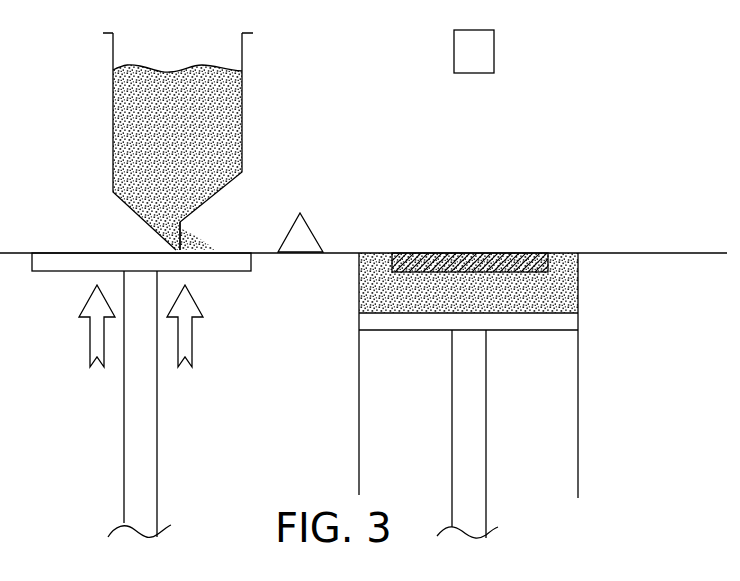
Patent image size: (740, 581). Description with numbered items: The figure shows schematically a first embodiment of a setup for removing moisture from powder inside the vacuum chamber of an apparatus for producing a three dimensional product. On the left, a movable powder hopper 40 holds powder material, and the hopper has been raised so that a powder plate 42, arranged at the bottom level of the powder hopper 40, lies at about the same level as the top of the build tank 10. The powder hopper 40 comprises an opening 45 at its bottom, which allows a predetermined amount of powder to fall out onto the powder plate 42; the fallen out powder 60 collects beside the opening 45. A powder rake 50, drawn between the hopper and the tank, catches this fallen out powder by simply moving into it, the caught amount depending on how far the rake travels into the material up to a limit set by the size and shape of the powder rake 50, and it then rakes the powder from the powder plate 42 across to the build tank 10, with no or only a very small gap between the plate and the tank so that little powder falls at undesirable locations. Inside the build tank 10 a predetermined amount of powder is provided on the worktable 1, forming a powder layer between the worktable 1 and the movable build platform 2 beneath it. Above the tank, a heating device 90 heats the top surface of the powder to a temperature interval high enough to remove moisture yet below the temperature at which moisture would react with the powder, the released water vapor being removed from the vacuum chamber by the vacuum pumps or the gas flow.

The worktable 1 is at (478, 253).
The build platform 2 is at (527, 320).
The build tank 10 is at (578, 454).
The powder hopper 40 is at (127, 113).
The powder plate 42 is at (219, 265).
The opening 45 is at (200, 232).
The powder rake 50 is at (300, 238).
The powder 60 is at (205, 246).
The heating device 90 is at (480, 48).